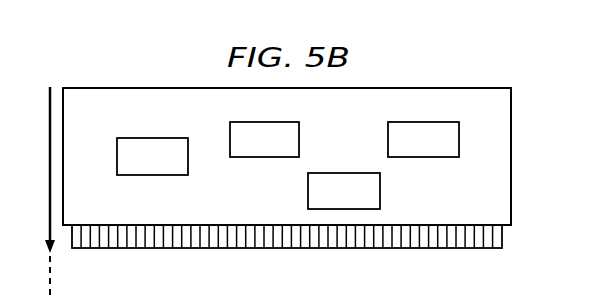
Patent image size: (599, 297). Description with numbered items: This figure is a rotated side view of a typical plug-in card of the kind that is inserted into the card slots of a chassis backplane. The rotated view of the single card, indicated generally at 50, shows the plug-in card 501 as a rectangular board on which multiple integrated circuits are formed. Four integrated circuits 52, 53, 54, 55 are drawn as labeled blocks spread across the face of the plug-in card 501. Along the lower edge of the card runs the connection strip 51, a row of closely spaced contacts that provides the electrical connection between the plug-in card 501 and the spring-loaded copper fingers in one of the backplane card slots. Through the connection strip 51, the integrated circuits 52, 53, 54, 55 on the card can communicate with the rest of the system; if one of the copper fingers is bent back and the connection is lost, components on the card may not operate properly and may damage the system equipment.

The single card (rotated view) 50 is at (450, 52).
The plug-in card 501 is at (512, 158).
The connection strip 51 is at (503, 232).
The integrated circuit 52 is at (152, 176).
The integrated circuit 53 is at (265, 158).
The integrated circuit 54 is at (340, 172).
The integrated circuit 55 is at (424, 158).